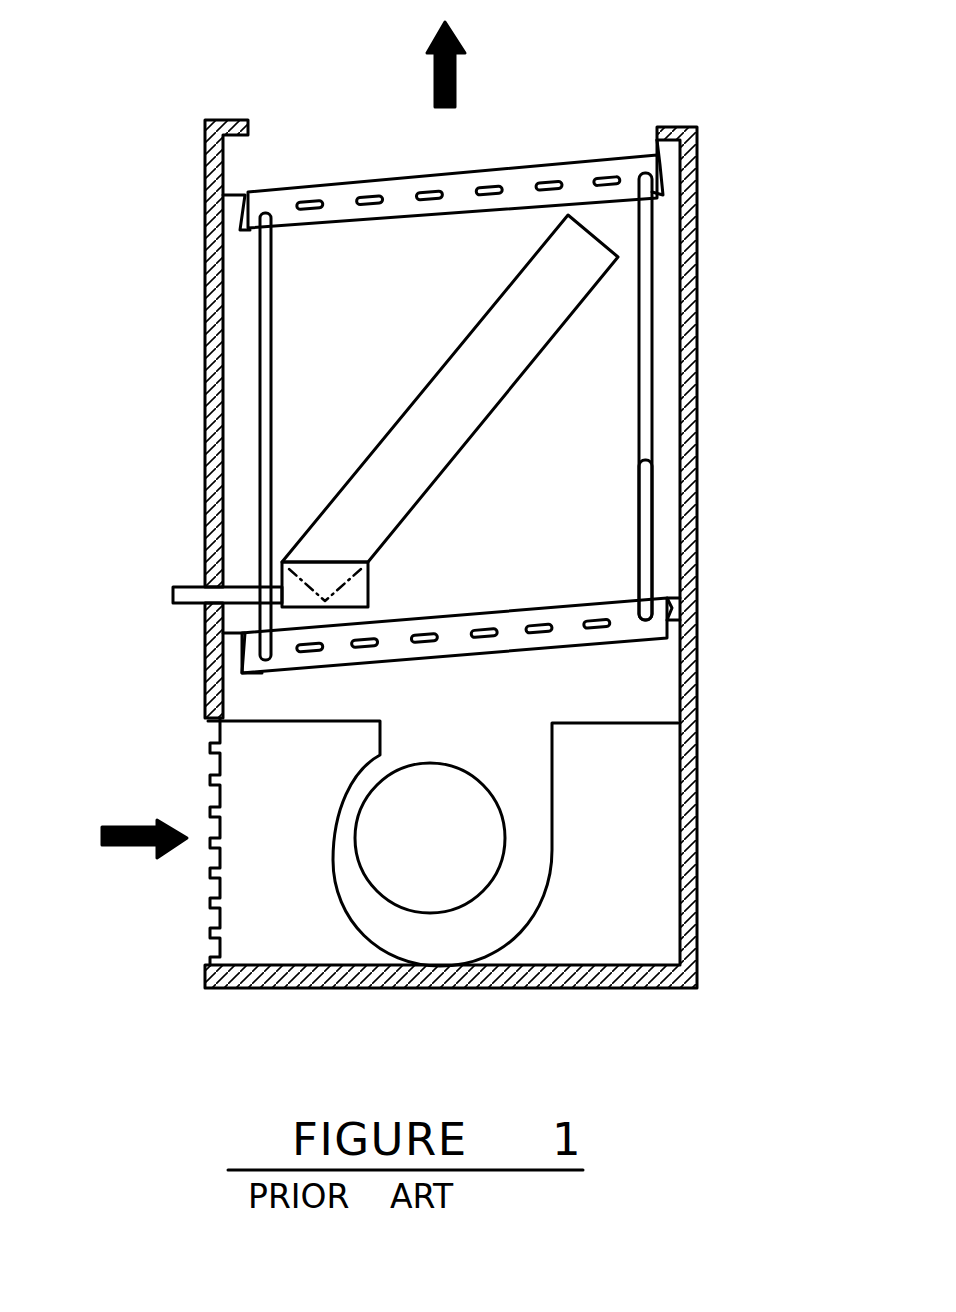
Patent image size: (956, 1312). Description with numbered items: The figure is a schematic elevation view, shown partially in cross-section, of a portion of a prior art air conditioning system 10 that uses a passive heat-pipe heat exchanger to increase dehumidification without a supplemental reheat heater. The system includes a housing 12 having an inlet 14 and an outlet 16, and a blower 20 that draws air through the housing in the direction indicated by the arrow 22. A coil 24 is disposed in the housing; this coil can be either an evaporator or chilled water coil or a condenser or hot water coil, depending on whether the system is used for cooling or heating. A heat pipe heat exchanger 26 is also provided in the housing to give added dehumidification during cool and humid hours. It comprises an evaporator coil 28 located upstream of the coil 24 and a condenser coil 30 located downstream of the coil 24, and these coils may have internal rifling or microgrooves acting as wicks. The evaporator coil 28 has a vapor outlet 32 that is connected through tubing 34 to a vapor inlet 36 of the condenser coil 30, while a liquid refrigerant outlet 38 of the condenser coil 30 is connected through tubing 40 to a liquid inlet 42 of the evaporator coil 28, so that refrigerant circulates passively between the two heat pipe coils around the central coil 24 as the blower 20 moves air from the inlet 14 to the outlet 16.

The air cleaning apparatus 10 is at (703, 217).
The housing 12 is at (688, 890).
The inlet 14 is at (210, 718).
The outlet 16 is at (658, 141).
The blower 20 is at (547, 893).
The arrow 22 is at (455, 78).
The coil 24 is at (430, 407).
The heat pipe heat exchanger 26 is at (656, 356).
The evaporator coil 28 is at (695, 613).
The condenser coil 30 is at (360, 200).
The vapor outlet 32 is at (658, 598).
The tubing 34 is at (643, 479).
The vapor inlet 36 is at (665, 145).
The liquid refrigerant outlet 38 is at (252, 193).
The tubing 40 is at (270, 335).
The liquid inlet 42 is at (262, 662).